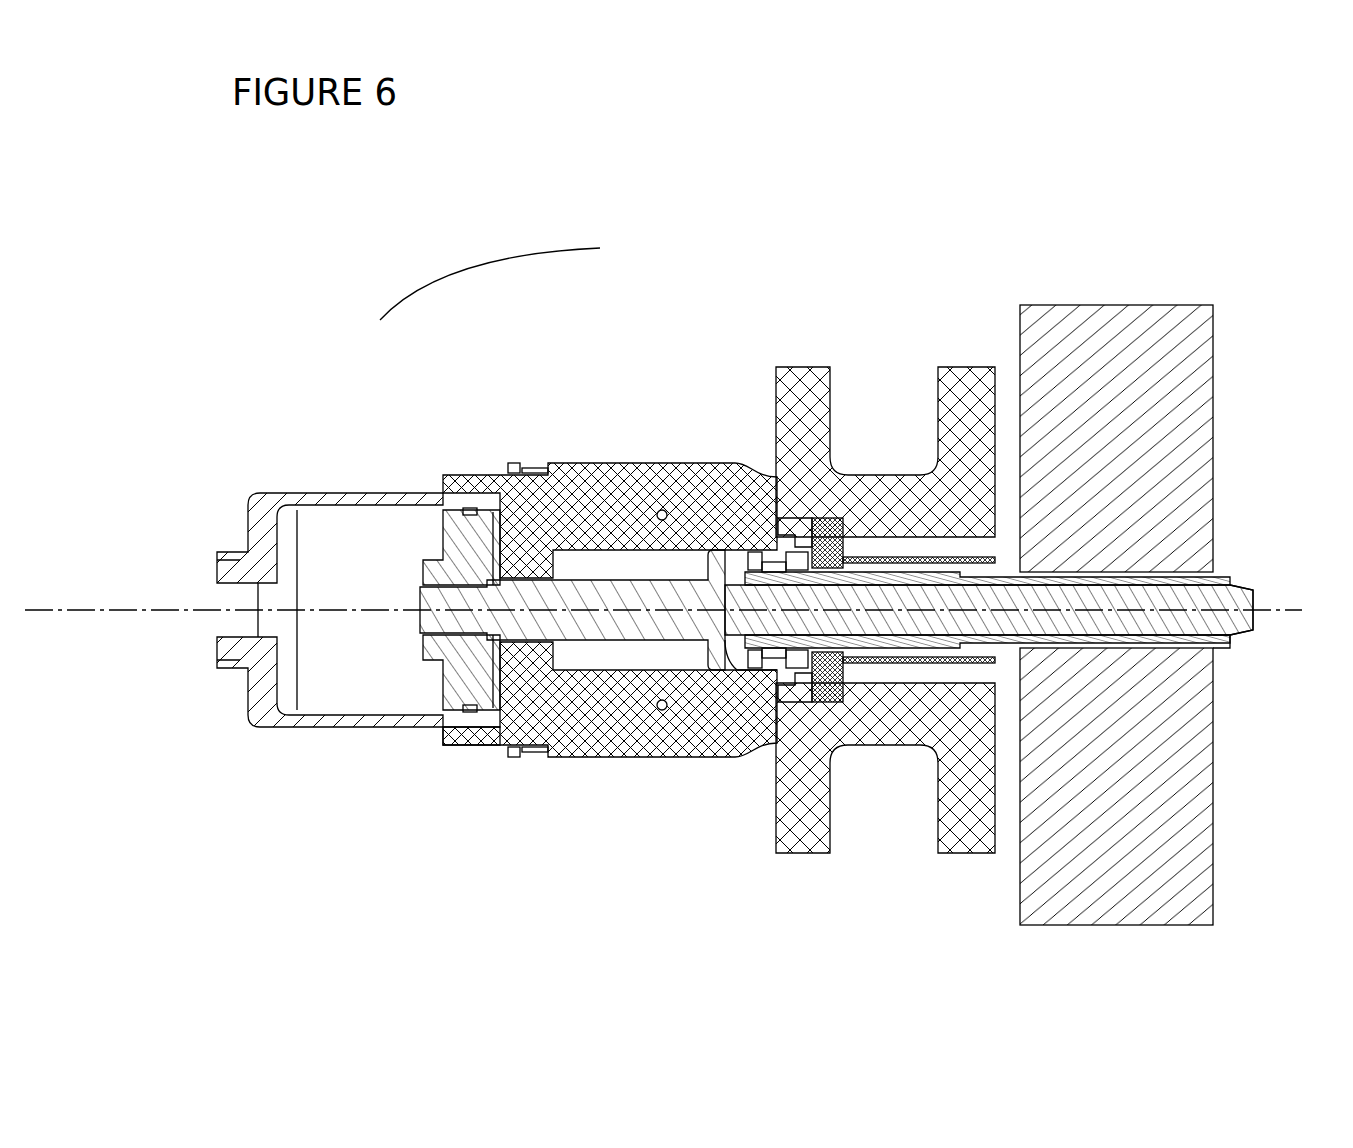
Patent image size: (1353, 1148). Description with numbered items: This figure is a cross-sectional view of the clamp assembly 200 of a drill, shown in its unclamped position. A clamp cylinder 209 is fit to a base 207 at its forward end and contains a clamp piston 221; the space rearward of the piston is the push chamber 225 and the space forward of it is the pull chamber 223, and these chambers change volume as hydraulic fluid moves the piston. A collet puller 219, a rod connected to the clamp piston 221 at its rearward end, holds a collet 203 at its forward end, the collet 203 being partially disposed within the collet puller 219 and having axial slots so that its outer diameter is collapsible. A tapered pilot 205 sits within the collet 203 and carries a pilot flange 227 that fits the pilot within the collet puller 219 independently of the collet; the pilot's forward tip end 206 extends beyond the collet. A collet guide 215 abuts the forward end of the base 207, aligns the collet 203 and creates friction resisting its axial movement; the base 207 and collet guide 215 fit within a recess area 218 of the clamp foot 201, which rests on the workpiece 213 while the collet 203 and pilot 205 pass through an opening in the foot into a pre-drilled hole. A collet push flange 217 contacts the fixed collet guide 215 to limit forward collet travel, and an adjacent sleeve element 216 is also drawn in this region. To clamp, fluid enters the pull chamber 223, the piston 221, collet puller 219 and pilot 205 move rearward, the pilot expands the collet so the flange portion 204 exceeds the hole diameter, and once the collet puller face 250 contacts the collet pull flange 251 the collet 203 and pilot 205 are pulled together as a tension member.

The clamp assembly 200 is at (473, 268).
The clamp foot 201 is at (957, 367).
The collet 203 is at (1232, 570).
The flange portion 204 is at (1230, 648).
The tapered pilot 205 is at (1252, 635).
The shaft tip 206 is at (1248, 583).
The base 207 is at (463, 750).
The clamp cylinder 209 is at (268, 733).
The workpiece 213 is at (1085, 305).
The collet guide 215 is at (895, 664).
The upper tube 216 is at (763, 548).
The collet push flange 217 is at (798, 668).
The recess area 218 is at (820, 517).
The collet puller 219 is at (625, 578).
The clamp piston 221 is at (437, 523).
The pull chamber 223 is at (506, 514).
The push chamber 225 is at (345, 549).
The pilot flange 227 is at (724, 646).
The collet puller face 250 is at (798, 522).
The collet pull flange 251 is at (750, 560).